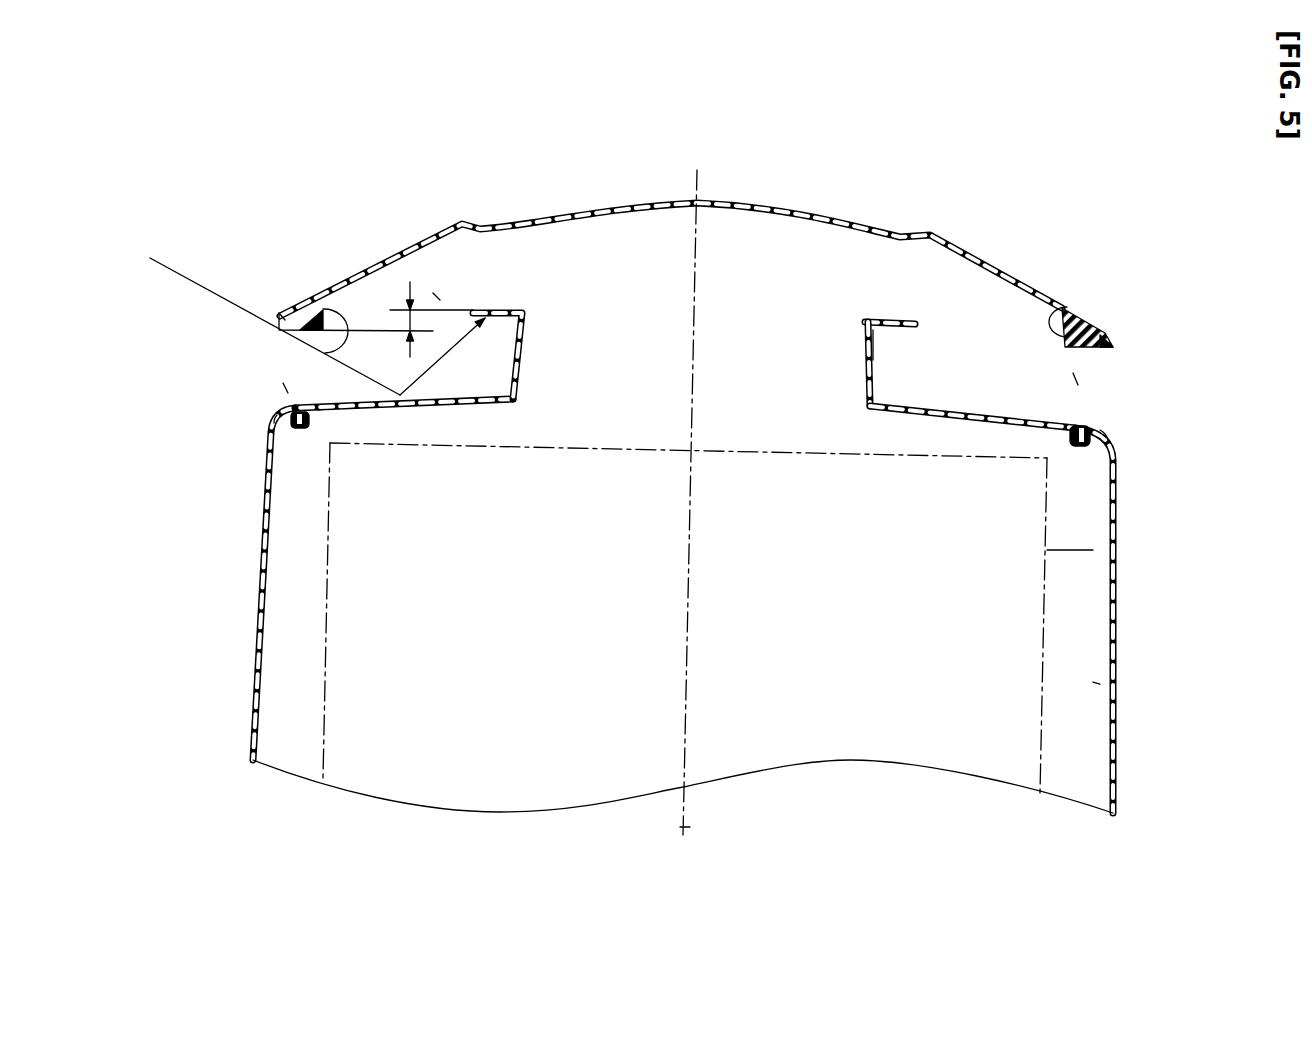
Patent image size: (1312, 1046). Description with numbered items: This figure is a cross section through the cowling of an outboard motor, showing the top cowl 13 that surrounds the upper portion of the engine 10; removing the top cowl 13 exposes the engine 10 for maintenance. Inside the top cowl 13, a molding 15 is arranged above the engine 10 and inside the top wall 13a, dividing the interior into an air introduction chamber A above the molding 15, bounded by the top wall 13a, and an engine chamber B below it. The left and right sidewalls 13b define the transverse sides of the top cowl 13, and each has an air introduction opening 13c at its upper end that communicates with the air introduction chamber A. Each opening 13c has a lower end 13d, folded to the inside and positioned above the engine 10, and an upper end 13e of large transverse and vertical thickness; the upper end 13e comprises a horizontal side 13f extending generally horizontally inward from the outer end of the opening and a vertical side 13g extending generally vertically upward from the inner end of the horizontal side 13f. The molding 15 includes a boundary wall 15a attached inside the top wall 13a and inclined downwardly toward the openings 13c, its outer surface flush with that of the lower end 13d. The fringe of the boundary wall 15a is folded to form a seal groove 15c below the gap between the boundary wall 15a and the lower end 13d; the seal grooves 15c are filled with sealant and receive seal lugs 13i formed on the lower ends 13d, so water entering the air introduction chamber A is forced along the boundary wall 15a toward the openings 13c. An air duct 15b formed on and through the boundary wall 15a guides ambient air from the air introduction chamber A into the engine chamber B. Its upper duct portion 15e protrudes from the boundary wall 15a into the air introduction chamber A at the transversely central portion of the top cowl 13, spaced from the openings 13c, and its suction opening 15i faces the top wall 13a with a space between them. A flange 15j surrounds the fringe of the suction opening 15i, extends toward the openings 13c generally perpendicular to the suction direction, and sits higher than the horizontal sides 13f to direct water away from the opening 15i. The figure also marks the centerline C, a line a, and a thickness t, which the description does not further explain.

The engine 10 is at (1093, 550).
The top cowl 13 is at (687, 468).
The top wall 13a is at (770, 210).
The sidewall 13b is at (265, 467).
The air introduction opening 13c is at (283, 383).
The lower end 13d is at (287, 408).
The upper end 13e is at (687, 309).
The horizontal side 13f is at (287, 340).
The vertical side 13g is at (322, 357).
The seal lug 13i is at (327, 418).
The molding 15 is at (686, 407).
The boundary wall 15a is at (455, 385).
The air duct 15b is at (940, 364).
The seal groove 15c is at (299, 430).
The upper duct portion 15e is at (870, 347).
The suction opening 15i is at (865, 323).
The flange 15j is at (887, 322).
The air introduction chamber A is at (433, 293).
The engine chamber B is at (1093, 682).
The center line / point C is at (313, 411).
The reference line a is at (202, 288).
The thickness t is at (400, 322).